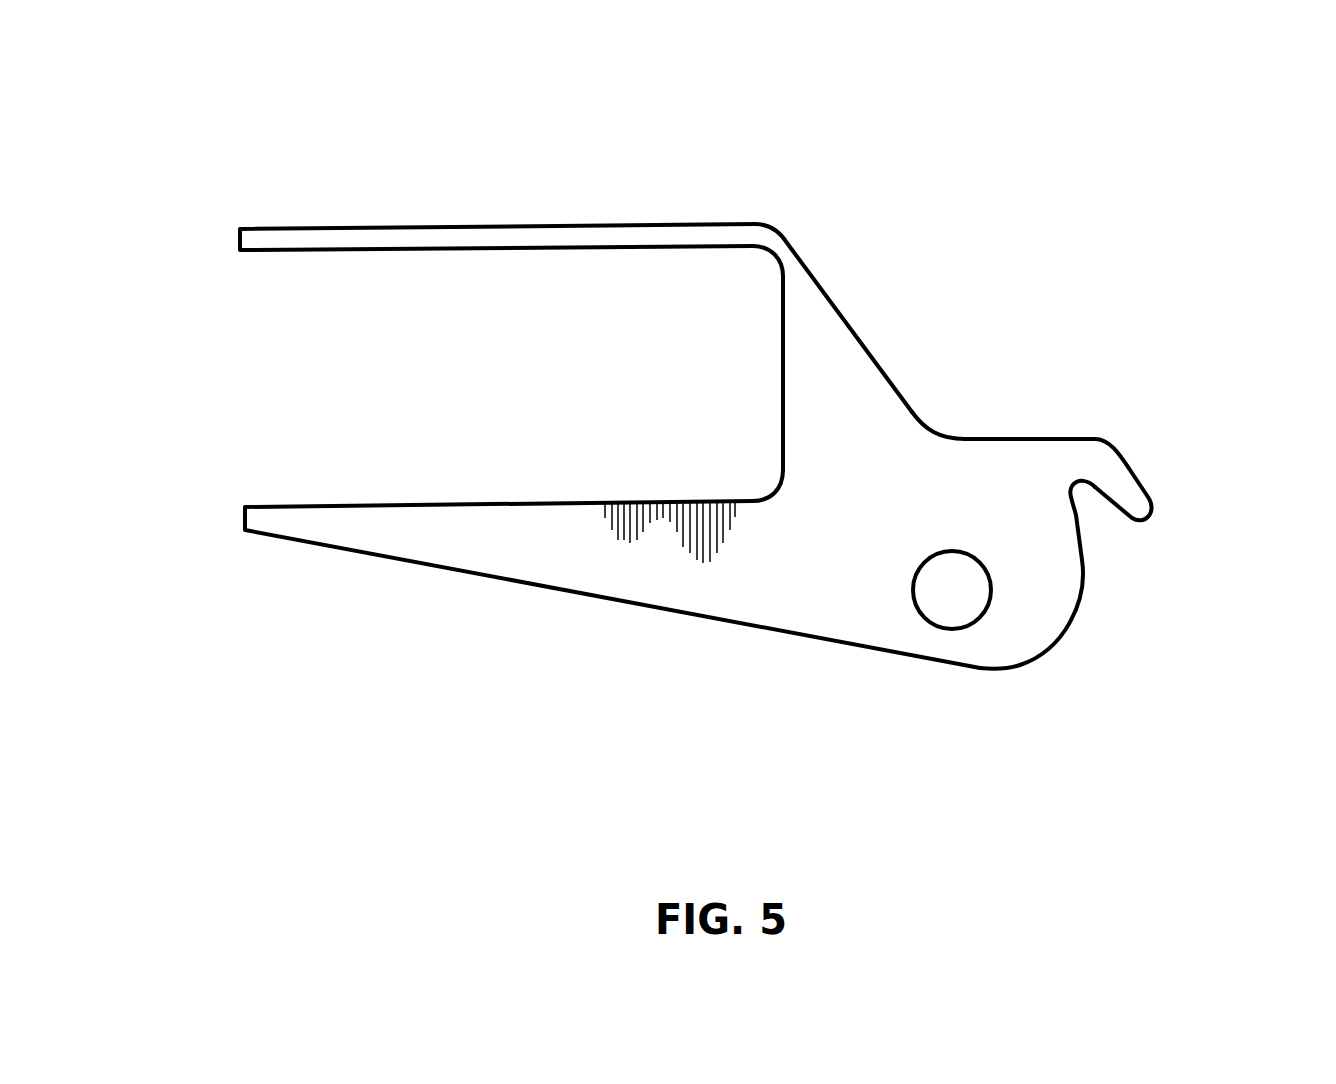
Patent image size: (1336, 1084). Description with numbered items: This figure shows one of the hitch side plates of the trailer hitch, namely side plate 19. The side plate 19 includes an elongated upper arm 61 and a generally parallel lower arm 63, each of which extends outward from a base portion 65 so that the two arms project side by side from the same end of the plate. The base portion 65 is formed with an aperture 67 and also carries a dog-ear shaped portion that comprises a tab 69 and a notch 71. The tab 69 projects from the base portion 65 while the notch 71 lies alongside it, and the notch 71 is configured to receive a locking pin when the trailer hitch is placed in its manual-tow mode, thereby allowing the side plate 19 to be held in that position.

The side plate 19 is at (913, 247).
The upper arm 61 is at (427, 238).
The lower arm 63 is at (373, 498).
The base portion 65 is at (1040, 657).
The aperture 67 is at (947, 603).
The tab 69 is at (1155, 490).
The notch 71 is at (1085, 498).